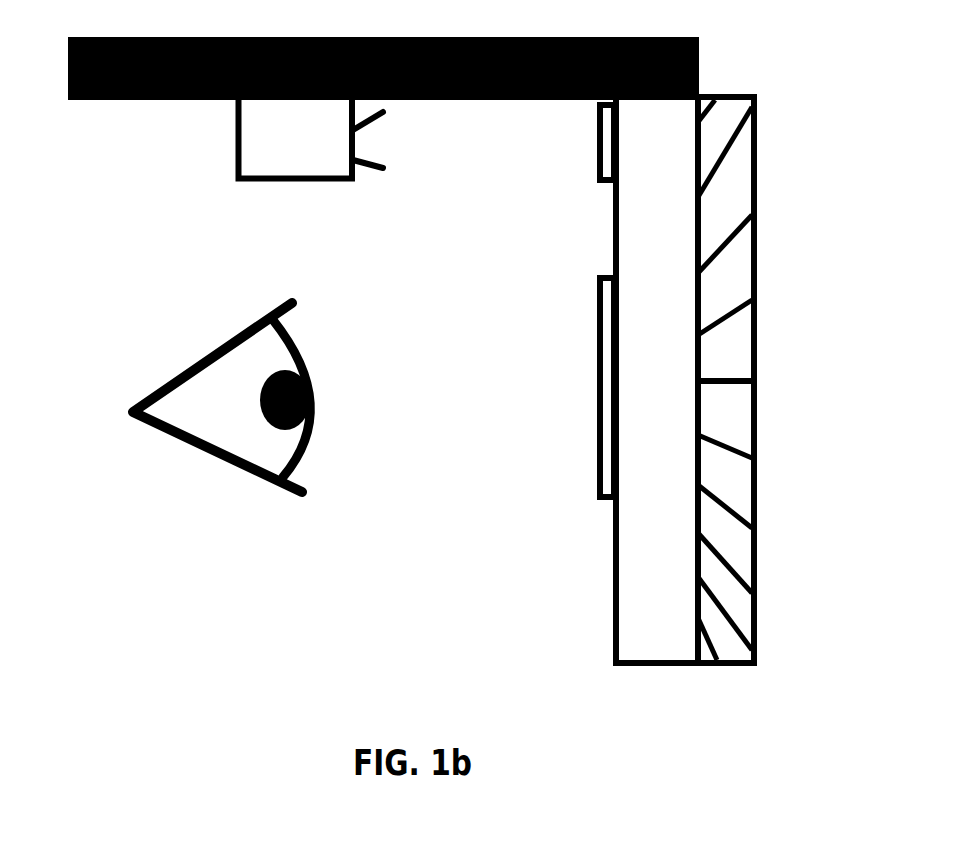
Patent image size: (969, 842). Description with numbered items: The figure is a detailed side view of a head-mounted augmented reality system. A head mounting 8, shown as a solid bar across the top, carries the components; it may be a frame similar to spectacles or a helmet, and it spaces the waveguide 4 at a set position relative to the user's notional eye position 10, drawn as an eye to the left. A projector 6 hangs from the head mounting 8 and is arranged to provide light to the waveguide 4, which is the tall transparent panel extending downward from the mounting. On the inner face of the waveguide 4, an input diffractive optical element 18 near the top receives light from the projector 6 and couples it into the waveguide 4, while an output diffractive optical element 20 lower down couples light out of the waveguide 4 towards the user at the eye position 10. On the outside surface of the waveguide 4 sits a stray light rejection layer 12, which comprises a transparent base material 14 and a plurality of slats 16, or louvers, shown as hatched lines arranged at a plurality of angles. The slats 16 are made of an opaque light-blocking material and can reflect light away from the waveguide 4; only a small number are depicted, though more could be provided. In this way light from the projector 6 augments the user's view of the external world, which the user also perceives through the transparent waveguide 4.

The waveguide 4 is at (628, 562).
The projector 6 is at (252, 155).
The head mounting 8 is at (87, 102).
The user's notional eye position 10 is at (253, 450).
The stray light rejection layer 12 is at (754, 170).
The transparent base material 14 is at (733, 283).
The plurality of slats 16 is at (740, 513).
The input diffractive optical element 18 is at (603, 145).
The output diffractive optical element 20 is at (597, 288).